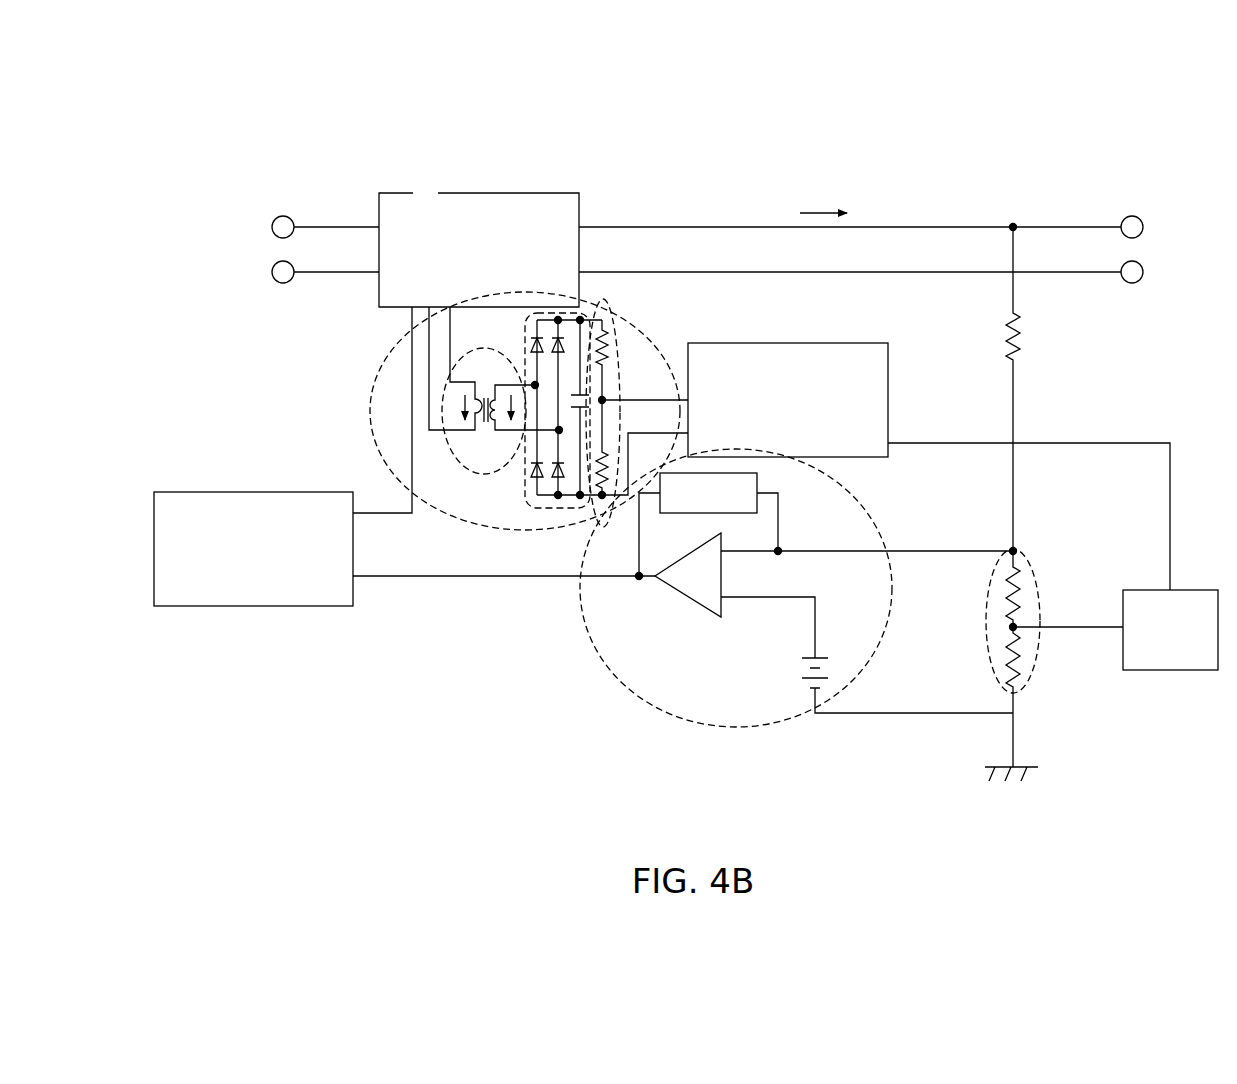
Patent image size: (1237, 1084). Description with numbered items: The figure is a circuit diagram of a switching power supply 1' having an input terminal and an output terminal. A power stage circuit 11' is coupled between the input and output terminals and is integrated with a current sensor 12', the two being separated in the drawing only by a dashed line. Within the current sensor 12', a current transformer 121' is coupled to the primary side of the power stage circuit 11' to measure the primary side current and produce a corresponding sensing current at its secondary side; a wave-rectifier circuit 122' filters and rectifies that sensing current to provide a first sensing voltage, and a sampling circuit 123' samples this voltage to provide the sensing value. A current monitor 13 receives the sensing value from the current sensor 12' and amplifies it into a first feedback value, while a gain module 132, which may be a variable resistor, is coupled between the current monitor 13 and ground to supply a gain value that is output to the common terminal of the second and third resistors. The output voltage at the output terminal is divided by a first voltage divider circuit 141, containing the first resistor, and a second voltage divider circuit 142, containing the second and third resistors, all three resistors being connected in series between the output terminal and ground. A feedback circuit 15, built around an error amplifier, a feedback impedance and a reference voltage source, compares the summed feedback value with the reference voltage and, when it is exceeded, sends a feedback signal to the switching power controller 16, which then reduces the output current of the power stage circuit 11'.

The switching power supply 1' is at (686, 509).
The power stage circuit 11' is at (445, 261).
The current sensor 12' is at (493, 434).
The current transformer 121' is at (433, 390).
The wave-rectifier circuit 122' is at (533, 440).
The sampling circuit 123' is at (578, 433).
The current monitor 13 is at (787, 343).
The gain module 132 is at (1163, 672).
The first voltage divider circuit 141 is at (1028, 347).
The second voltage divider circuit 142 is at (1042, 675).
The feedback circuit 15 is at (650, 717).
The switching power controller 16 is at (252, 606).